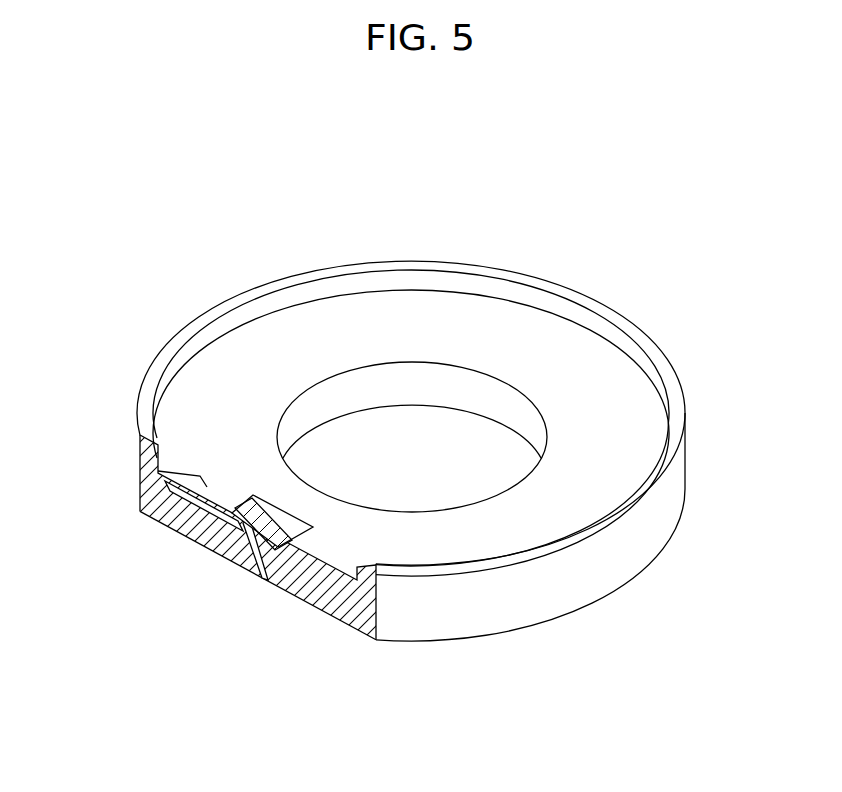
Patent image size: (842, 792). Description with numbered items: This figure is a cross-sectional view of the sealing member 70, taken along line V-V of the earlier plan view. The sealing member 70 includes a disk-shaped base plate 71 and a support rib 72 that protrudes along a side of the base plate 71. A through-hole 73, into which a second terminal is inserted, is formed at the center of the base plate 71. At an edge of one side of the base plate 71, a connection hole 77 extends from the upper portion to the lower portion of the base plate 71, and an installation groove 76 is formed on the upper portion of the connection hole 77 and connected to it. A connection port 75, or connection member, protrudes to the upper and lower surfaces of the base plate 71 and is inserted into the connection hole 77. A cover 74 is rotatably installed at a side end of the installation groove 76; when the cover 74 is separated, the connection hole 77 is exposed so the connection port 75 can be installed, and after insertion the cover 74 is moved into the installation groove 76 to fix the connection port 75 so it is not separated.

The sealing member 70 is at (568, 276).
The base plate 71 is at (430, 313).
The support rib 72 is at (208, 322).
The through-hole 73 is at (327, 402).
The cover 74 is at (220, 550).
The connection port 75 is at (207, 487).
The installation groove 76 is at (300, 540).
The connection hole 77 is at (250, 565).